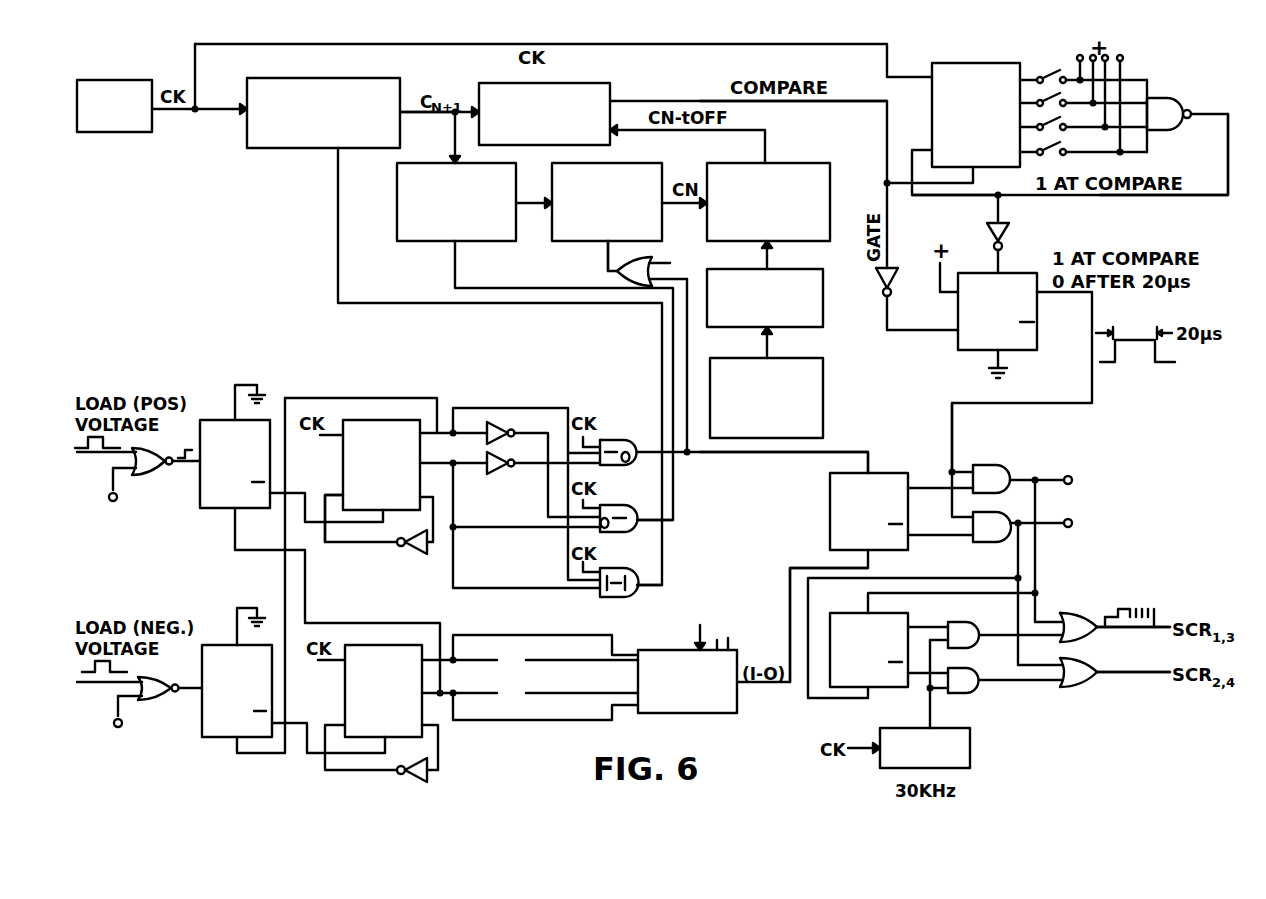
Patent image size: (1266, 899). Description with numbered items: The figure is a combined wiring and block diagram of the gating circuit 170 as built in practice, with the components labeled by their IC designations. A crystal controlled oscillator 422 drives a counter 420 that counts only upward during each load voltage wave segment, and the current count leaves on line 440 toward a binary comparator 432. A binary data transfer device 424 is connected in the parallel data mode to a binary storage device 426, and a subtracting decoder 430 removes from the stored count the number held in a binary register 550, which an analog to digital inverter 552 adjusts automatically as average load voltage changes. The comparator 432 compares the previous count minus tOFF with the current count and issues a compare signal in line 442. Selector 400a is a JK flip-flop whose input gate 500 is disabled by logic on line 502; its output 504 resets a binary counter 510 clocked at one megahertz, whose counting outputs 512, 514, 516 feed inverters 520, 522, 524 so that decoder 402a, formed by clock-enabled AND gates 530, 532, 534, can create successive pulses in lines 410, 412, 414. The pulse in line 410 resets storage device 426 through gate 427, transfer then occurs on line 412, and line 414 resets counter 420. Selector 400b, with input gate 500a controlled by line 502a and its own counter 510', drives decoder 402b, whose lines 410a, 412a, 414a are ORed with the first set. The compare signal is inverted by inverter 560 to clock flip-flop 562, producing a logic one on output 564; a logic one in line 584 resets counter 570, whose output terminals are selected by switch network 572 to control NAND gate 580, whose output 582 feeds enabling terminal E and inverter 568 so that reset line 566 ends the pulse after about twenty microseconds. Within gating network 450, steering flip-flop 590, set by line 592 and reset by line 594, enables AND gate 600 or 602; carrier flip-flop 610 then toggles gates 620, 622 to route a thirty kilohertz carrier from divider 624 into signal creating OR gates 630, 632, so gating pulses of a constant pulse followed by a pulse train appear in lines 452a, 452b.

The gating circuit 170 is at (185, 243).
The crystal controlled oscillator 422 is at (114, 132).
The counter 420 is at (318, 148).
The counter output CN+1 440 is at (440, 104).
The binary comparator 432 is at (592, 83).
The comparison signal line 442 is at (828, 101).
The binary data transfer device 424 is at (472, 241).
The binary storage device 426 is at (647, 163).
The subtracting decoder 430 is at (792, 163).
The binary register 550 is at (823, 298).
The analog to digital inverter 552 is at (823, 368).
The gate 427 is at (608, 270).
The line 410a is at (670, 263).
The counter 570 is at (970, 62).
The switch network 572 is at (1050, 72).
The NAND gate 580 is at (1172, 98).
The output line 582 is at (1178, 195).
The line 584 is at (940, 195).
The reset line 566 is at (1008, 232).
The inverter 568 is at (994, 252).
The inverter 560 is at (892, 296).
The flip-flop 562 is at (1037, 330).
The output line 564 is at (1040, 403).
The selector flip-flop 400a is at (218, 419).
The input gate 500 is at (150, 475).
The line 502 is at (108, 500).
The selector flip-flop 400b is at (215, 644).
The input gate 500a is at (158, 700).
The line 502a is at (120, 728).
The output line 504 is at (300, 493).
The binary counter 510 is at (381, 438).
The inverter 524 is at (405, 556).
The counting output 516 is at (430, 553).
The counter 510' is at (383, 713).
The counting output 512 is at (486, 422).
The inverter 520 is at (509, 428).
The counting output 514 is at (480, 470).
The inverter 522 is at (508, 468).
The AND gate 530 is at (612, 440).
The AND gate 532 is at (610, 505).
The AND gate 534 is at (614, 568).
The decoder 402a is at (612, 405).
The line 410 is at (690, 457).
The line 412 is at (675, 497).
The line 414 is at (664, 552).
The line 592 is at (866, 452).
The decoder 402b is at (650, 650).
The line 414a is at (700, 625).
The line 412a is at (730, 645).
The line 594 is at (790, 568).
The steering flip-flop 590 is at (868, 473).
The carrier flip-flop 610 is at (840, 704).
The AND gate 602 is at (985, 465).
The AND gate 600 is at (992, 542).
The gate 620 is at (958, 622).
The gate 622 is at (968, 693).
The signal creating OR gate 630 is at (1085, 613).
The signal creating OR gate 632 is at (1078, 687).
The gating pulse line 452a is at (1165, 626).
The gating pulse line 452b is at (1147, 672).
The gating network 450 is at (1033, 700).
The divider 30 kHz 624 is at (970, 750).